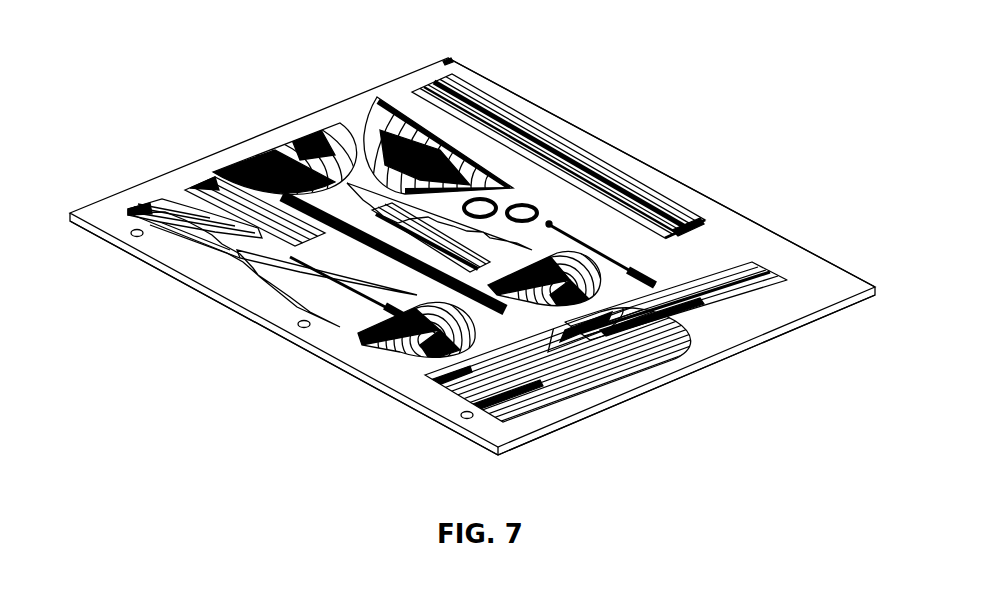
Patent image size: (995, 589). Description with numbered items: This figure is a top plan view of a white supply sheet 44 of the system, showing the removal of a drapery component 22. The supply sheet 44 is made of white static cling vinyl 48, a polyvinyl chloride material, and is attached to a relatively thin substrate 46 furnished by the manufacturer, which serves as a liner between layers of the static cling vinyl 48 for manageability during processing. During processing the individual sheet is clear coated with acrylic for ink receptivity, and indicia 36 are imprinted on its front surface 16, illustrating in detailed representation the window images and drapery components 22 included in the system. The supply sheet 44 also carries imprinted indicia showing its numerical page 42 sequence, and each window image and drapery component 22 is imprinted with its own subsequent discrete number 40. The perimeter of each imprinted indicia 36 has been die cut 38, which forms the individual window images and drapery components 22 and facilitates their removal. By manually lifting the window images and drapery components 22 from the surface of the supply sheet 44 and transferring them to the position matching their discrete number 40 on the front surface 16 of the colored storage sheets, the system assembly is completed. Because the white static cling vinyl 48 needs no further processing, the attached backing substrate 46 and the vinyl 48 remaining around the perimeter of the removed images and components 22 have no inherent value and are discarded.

The front surface 16 is at (160, 187).
The drapery component 22 is at (215, 190).
The indicia 36 is at (143, 209).
The die cut 38 is at (248, 283).
The discrete number 40 is at (690, 220).
The numerical page sequence 42 is at (451, 57).
The supply sheet 44 is at (395, 392).
The substrate 46 is at (653, 388).
The white static cling vinyl 48 is at (750, 240).